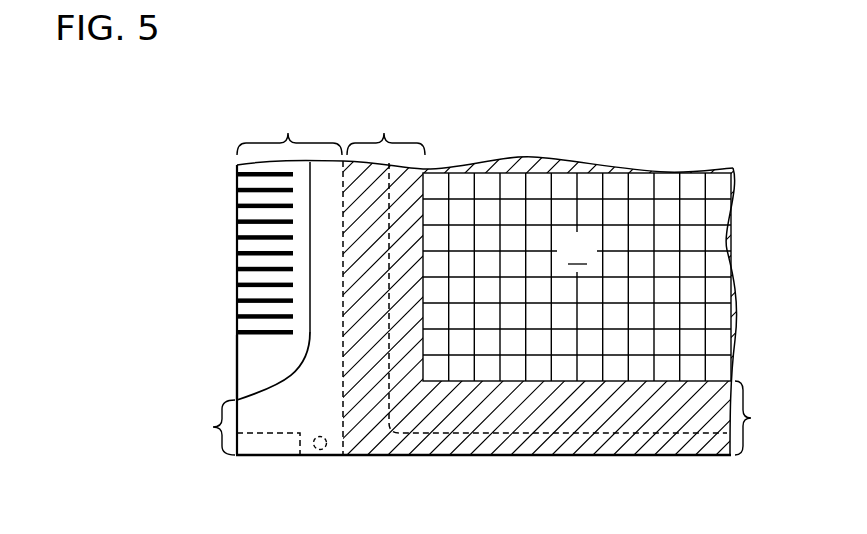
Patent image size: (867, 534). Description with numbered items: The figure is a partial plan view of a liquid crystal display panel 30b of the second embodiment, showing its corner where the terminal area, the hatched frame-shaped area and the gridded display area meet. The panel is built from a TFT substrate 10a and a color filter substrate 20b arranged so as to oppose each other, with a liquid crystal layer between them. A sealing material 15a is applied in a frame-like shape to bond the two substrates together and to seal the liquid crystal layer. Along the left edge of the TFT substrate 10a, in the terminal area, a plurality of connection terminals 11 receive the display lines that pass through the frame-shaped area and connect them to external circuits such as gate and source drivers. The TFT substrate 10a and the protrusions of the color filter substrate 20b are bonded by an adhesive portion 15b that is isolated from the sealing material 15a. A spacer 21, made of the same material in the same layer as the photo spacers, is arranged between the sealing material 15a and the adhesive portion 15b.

The liquid crystal display panel 30b is at (320, 86).
The connection terminals 11 is at (222, 175).
The TFT substrate 10a is at (255, 358).
The color filter substrate 20b is at (266, 398).
The adhesive portion 15b is at (268, 443).
The spacer 21 is at (321, 451).
The sealing material 15a is at (605, 443).